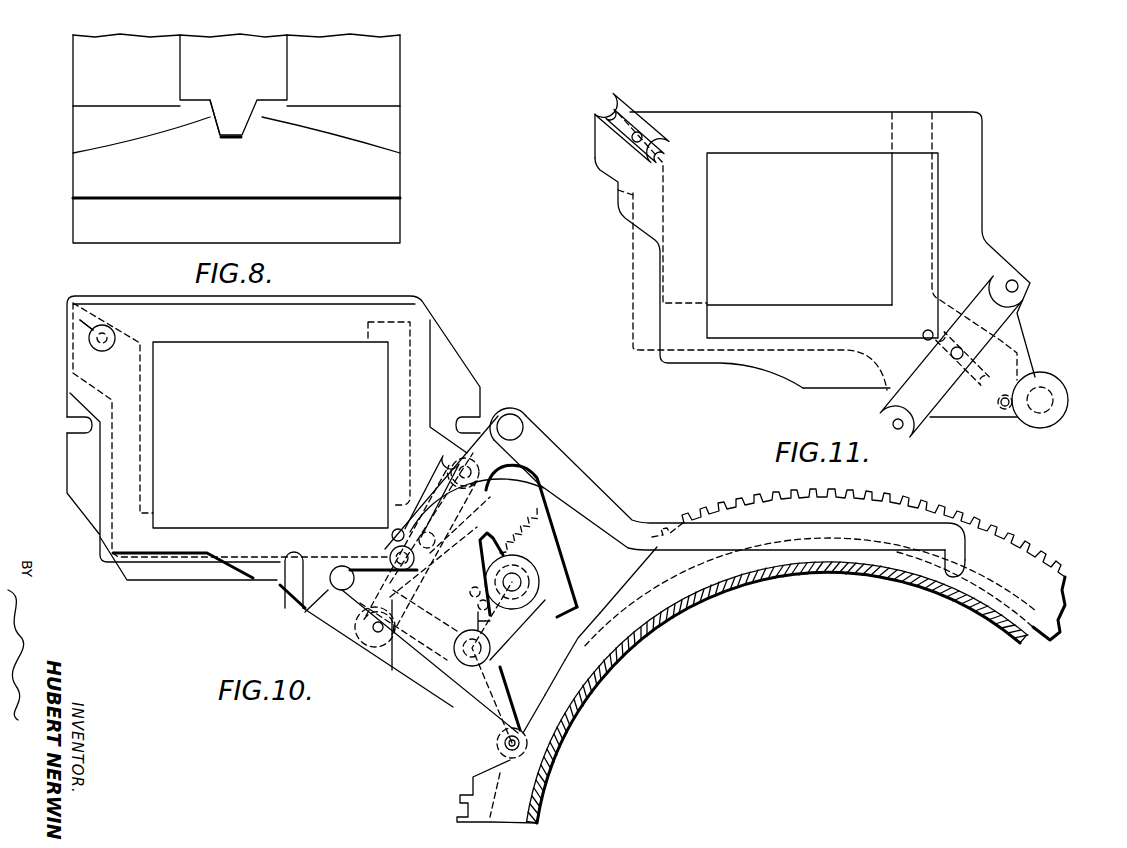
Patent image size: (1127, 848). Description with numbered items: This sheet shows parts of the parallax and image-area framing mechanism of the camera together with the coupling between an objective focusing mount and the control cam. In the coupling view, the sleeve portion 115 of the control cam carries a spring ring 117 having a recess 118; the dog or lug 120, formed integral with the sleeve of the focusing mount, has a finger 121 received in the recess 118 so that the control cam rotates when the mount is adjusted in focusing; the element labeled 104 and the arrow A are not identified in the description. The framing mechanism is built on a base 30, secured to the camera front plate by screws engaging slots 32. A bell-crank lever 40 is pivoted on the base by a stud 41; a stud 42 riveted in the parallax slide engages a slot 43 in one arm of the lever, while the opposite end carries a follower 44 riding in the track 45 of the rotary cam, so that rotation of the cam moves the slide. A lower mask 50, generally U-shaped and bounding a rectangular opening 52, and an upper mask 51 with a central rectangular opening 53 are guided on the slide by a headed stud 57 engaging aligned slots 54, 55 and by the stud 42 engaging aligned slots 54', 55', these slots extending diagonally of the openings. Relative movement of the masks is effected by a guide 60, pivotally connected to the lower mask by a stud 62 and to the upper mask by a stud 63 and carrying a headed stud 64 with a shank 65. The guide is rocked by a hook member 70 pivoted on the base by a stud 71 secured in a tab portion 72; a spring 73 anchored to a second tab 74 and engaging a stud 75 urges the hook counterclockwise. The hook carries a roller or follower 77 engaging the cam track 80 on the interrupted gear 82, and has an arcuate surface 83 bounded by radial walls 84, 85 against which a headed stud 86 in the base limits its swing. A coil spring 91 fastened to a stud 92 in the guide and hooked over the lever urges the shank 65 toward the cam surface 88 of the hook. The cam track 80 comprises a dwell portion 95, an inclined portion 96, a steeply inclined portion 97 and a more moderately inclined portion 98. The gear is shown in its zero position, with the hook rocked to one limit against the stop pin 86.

In FIG. 8, the film base 104 is at (388, 63).
In FIG. 8, the sleeve portion 115 is at (388, 128).
In FIG. 8, the spring ring 117 is at (338, 147).
In FIG. 8, the recess 118 is at (233, 140).
In FIG. 8, the dog or lug 120 is at (273, 63).
In FIG. 8, the finger 121 is at (227, 118).
In FIG. 10, the base 30 is at (465, 380).
In FIG. 10, the slots 32 is at (67, 425).
In FIG. 10, the bell-crank lever 40 is at (625, 520).
In FIG. 10, the stud 41 is at (523, 425).
In FIG. 10, the stud 42 is at (434, 562).
In FIG. 11, the stud 42 is at (957, 347).
In FIG. 10, the slot 43 is at (445, 486).
In FIG. 10, the follower 44 is at (965, 570).
In FIG. 10, the track 45 is at (998, 600).
In FIG. 10, the lower mask 50 is at (70, 378).
In FIG. 11, the lower mask 50 is at (638, 267).
In FIG. 10, the upper mask 51 is at (250, 330).
In FIG. 11, the upper mask 51 is at (822, 382).
In FIG. 11, the rectangular opening 52 is at (790, 303).
In FIG. 11, the central rectangular opening 53 is at (708, 232).
In FIG. 11, the slot 54 is at (617, 127).
In FIG. 11, the slot 54' is at (916, 323).
In FIG. 10, the slot 55 is at (62, 327).
In FIG. 11, the slot 55 is at (649, 136).
In FIG. 11, the slot 55' is at (958, 359).
In FIG. 10, the headed stud 57 is at (89, 339).
In FIG. 11, the headed stud 57 is at (637, 143).
In FIG. 10, the guide 60 is at (440, 606).
In FIG. 11, the guide 60 is at (1020, 348).
In FIG. 10, the stud 62 is at (367, 640).
In FIG. 11, the stud 62 is at (903, 430).
In FIG. 10, the stud 63 is at (478, 468).
In FIG. 11, the stud 63 is at (1019, 283).
In FIG. 10, the headed stud 64 is at (540, 590).
In FIG. 11, the headed stud 64 is at (1067, 398).
In FIG. 11, the shank 65 is at (1058, 380).
In FIG. 10, the hook member 70 is at (560, 560).
In FIG. 10, the stud 71 is at (345, 590).
In FIG. 10, the tab portion 72 is at (345, 628).
In FIG. 10, the spring 73 is at (295, 603).
In FIG. 10, the second tab 74 is at (298, 570).
In FIG. 10, the stud 75 is at (392, 553).
In FIG. 10, the roller or follower 77 is at (498, 745).
In FIG. 10, the cam track 80 is at (542, 700).
In FIG. 10, the interrupted gear 82 is at (1010, 542).
In FIG. 10, the arcuate surface 83 is at (494, 623).
In FIG. 10, the radial wall 84 is at (500, 665).
In FIG. 10, the radial wall 85 is at (522, 625).
In FIG. 10, the headed stud 86 is at (455, 650).
In FIG. 10, the cam surface 88 is at (558, 616).
In FIG. 10, the coil spring 91 is at (525, 531).
In FIG. 10, the stud 92 is at (480, 610).
In FIG. 11, the stud 92 is at (1003, 410).
In FIG. 10, the dwell portion 95 is at (553, 685).
In FIG. 10, the inclined portion 96 is at (472, 778).
In FIG. 10, the steeply inclined portion 97 is at (575, 647).
In FIG. 10, the moderately inclined portion 98 is at (612, 598).
In FIG. 10, the camera housing A is at (627, 683).